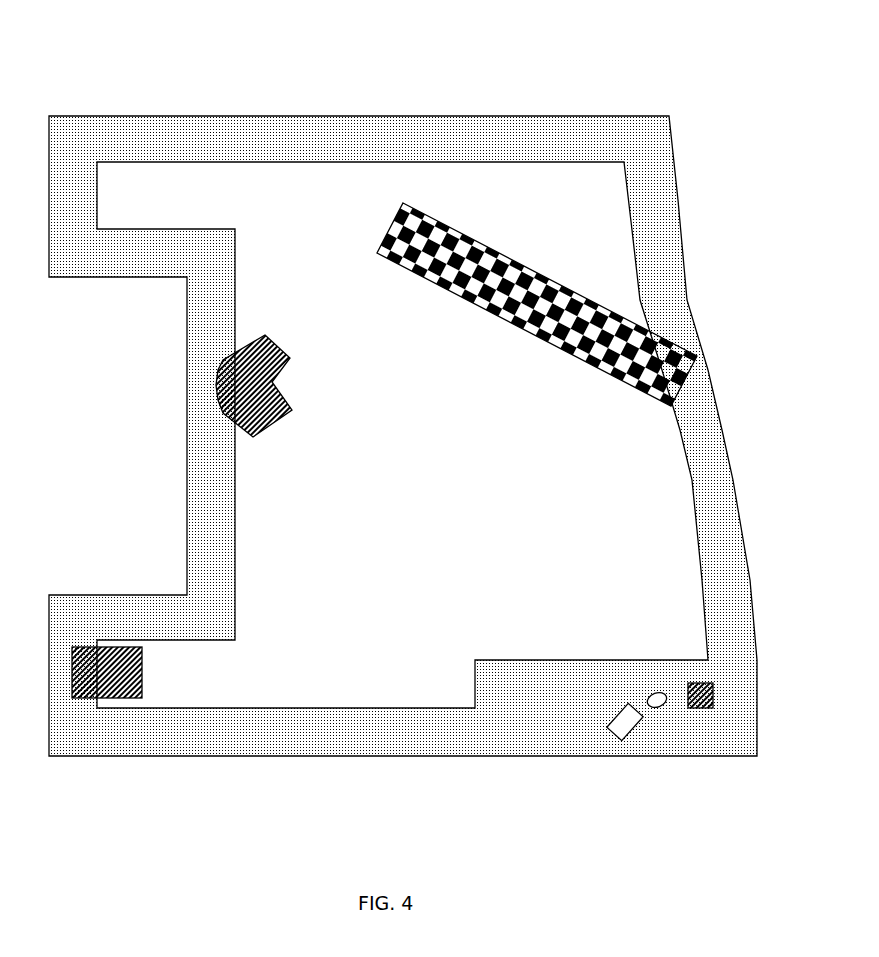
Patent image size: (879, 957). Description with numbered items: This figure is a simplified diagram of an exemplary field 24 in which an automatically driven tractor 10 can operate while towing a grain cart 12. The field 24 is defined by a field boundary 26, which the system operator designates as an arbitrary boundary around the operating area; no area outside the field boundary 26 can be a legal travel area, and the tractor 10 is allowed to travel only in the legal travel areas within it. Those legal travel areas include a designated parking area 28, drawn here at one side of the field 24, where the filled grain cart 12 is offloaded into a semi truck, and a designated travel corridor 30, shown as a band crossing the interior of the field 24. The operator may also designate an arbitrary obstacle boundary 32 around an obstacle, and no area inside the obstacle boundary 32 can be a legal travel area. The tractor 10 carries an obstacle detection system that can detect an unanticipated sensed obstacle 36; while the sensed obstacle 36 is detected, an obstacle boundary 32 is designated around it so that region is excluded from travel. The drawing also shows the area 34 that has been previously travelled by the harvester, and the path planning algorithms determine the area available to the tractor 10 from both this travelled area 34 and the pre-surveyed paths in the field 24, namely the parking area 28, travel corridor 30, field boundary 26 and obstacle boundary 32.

The tractor 10 is at (667, 710).
The grain cart 12 is at (608, 738).
The field 24 is at (585, 208).
The field boundary 26 is at (478, 111).
The parking area 28 is at (111, 638).
The travel corridor 30 is at (418, 285).
The obstacle boundary 32 is at (343, 443).
The previously travelled area 34 is at (540, 705).
The sensed obstacle 36 is at (696, 679).